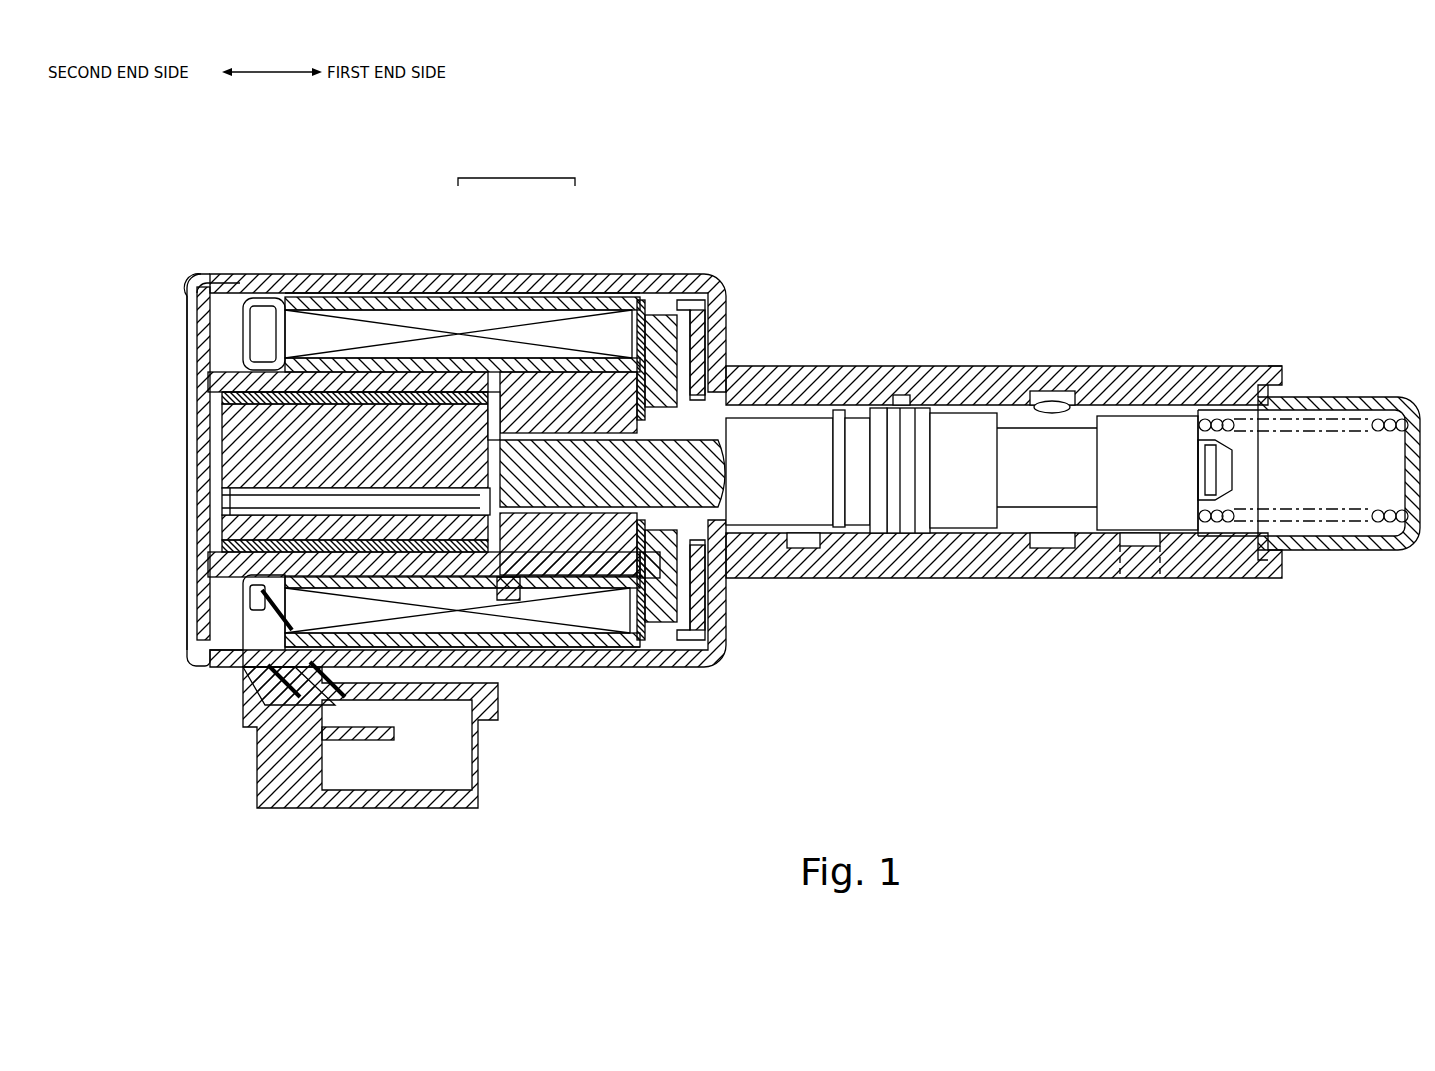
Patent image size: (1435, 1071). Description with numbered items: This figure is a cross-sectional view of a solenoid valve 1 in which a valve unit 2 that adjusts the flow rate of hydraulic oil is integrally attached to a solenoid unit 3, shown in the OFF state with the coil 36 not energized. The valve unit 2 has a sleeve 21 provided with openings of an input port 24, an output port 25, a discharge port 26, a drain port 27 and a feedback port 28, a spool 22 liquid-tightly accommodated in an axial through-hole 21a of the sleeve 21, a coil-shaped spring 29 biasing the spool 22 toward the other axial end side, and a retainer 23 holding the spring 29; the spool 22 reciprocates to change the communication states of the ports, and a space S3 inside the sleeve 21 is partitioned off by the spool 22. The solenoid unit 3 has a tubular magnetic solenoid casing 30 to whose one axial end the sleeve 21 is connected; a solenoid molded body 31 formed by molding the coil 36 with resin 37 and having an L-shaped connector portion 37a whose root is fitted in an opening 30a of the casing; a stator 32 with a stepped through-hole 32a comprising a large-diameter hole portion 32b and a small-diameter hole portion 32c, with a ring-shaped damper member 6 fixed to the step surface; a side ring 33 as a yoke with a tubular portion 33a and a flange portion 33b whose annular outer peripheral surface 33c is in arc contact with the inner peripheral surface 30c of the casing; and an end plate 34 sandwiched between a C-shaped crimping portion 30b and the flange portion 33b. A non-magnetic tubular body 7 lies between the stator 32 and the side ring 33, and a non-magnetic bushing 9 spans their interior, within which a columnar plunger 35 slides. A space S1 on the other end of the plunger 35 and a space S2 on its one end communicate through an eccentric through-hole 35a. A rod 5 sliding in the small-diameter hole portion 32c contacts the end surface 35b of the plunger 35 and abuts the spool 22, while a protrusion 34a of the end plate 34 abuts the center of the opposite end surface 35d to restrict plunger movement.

The solenoid valve 1 is at (1193, 140).
The valve unit 2 is at (1073, 452).
The solenoid unit 3 is at (232, 220).
The rod 5 is at (712, 585).
The damper member 6 is at (585, 560).
The tubular body 7 is at (500, 385).
The bushing 9 is at (272, 382).
The sleeve 21 is at (1180, 375).
The through-hole 21a is at (985, 560).
The spool 22 is at (935, 410).
The retainer 23 is at (1372, 548).
The input port 24 is at (980, 380).
The output port 25 is at (1062, 378).
The discharge port 26 is at (1145, 572).
The drain port 27 is at (815, 560).
The feedback port 28 is at (886, 534).
The spring 29 is at (1388, 397).
The solenoid casing 30 is at (648, 267).
The opening 30a is at (358, 660).
The crimping portion 30b is at (196, 290).
The inner peripheral surface 30c is at (268, 294).
The solenoid molded body 31 is at (597, 268).
The stator 32 is at (567, 442).
The through-hole 32a is at (516, 163).
The large-diameter hole portion 32b is at (545, 435).
The small-diameter hole portion 32c is at (555, 400).
The side ring 33 is at (148, 425).
The tubular portion 33a is at (230, 585).
The flange portion 33b is at (228, 643).
The annular outer peripheral surface 33c is at (228, 281).
The end plate 34 is at (242, 345).
The protrusion 34a is at (232, 478).
The plunger 35 is at (268, 442).
The through-hole 35a is at (232, 547).
The end surface 35b is at (506, 600).
The end surface 35d is at (262, 400).
The coil 36 is at (333, 335).
The resin 37 is at (372, 300).
The connector portion 37a is at (289, 786).
The space S1 is at (205, 500).
The space S2 is at (490, 395).
The space S3 is at (1040, 548).